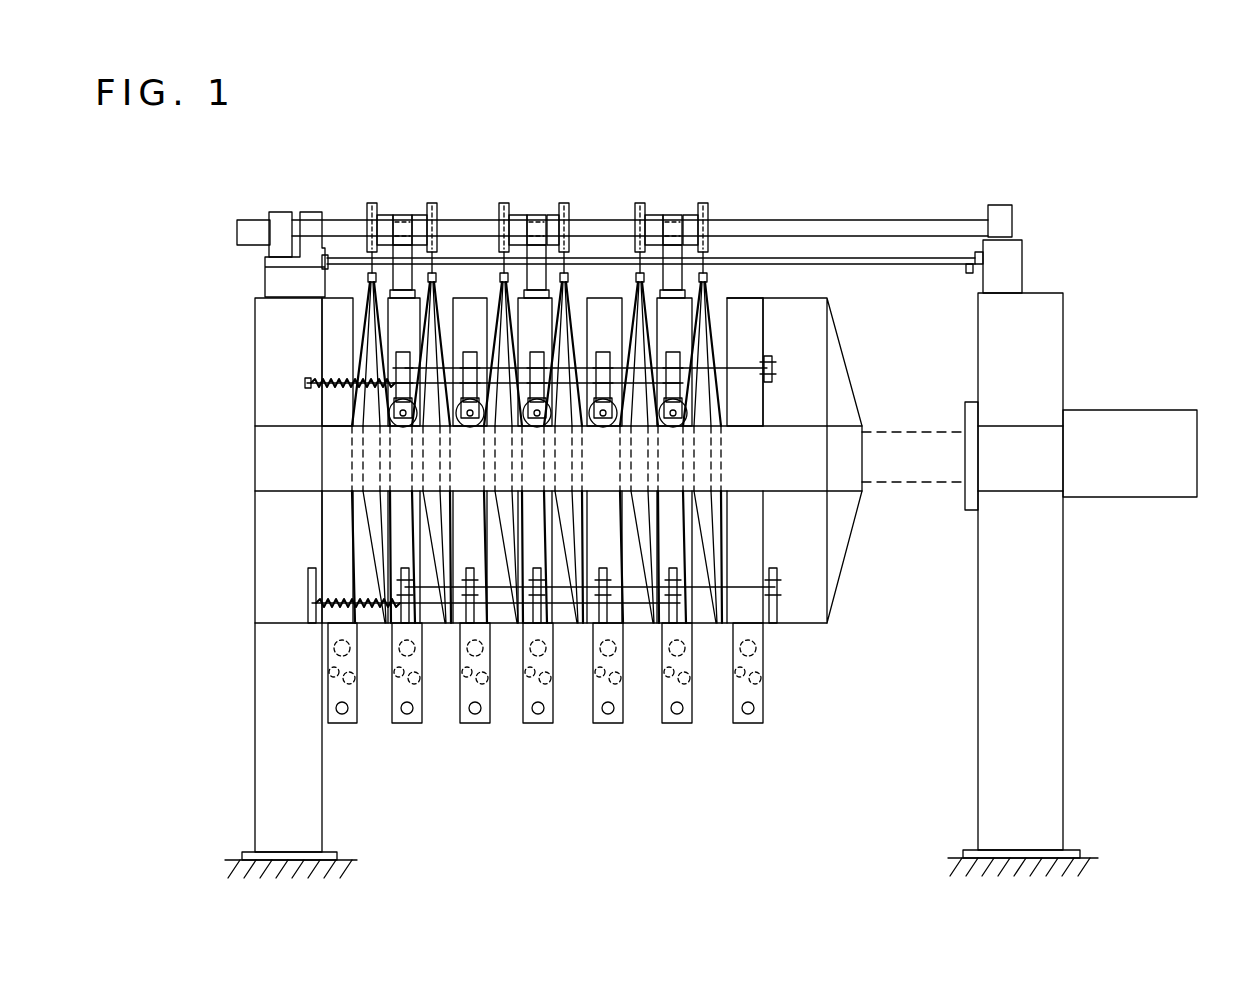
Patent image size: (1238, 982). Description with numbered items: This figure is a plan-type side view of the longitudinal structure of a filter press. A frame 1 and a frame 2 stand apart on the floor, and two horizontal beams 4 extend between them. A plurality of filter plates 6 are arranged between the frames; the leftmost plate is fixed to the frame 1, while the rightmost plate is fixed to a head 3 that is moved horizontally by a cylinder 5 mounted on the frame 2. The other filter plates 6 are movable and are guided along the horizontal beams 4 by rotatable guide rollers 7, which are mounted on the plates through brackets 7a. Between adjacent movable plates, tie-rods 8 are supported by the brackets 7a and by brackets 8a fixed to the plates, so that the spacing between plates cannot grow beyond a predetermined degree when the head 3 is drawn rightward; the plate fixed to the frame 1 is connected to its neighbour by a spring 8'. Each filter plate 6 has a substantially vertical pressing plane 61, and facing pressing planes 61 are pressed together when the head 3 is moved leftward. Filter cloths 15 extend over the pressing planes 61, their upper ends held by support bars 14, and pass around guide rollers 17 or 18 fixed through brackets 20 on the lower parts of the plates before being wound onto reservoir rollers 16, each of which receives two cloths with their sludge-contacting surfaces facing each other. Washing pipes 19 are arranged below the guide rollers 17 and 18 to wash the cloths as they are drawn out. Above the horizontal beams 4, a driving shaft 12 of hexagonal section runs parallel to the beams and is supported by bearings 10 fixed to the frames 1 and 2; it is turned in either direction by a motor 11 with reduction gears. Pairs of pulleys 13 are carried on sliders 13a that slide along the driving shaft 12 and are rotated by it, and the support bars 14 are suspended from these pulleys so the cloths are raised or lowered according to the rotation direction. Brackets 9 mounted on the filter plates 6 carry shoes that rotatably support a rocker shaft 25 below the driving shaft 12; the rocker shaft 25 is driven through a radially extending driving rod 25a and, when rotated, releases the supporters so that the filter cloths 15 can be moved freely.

The frame 1 is at (262, 366).
The frame 2 is at (1063, 340).
The head 3 is at (807, 377).
The horizontal beams 4 is at (922, 484).
The cylinder 5 is at (1152, 420).
The filter plates 6 is at (332, 322).
The pressing plane 61 is at (605, 330).
The guide rollers 7 is at (467, 430).
The brackets 7a is at (392, 412).
The tie-rods 8 is at (555, 465).
The spring 8' is at (333, 574).
The brackets 8a is at (683, 613).
The brackets 9 is at (537, 262).
The bearings 10 is at (308, 212).
The motor 11 is at (245, 220).
The driving shaft 12 is at (880, 222).
The pulleys 13 is at (372, 203).
The slider 13a is at (392, 228).
The support bars 14 is at (370, 276).
The filter cloths 15 is at (572, 360).
The reservoir rollers 16 is at (340, 645).
The guide rollers 17 is at (352, 682).
The guide rollers 18 is at (636, 700).
The washing pipe 19 is at (536, 725).
The brackets 20 is at (612, 723).
The rocker shaft 25 is at (940, 258).
The driving rod 25a is at (966, 273).